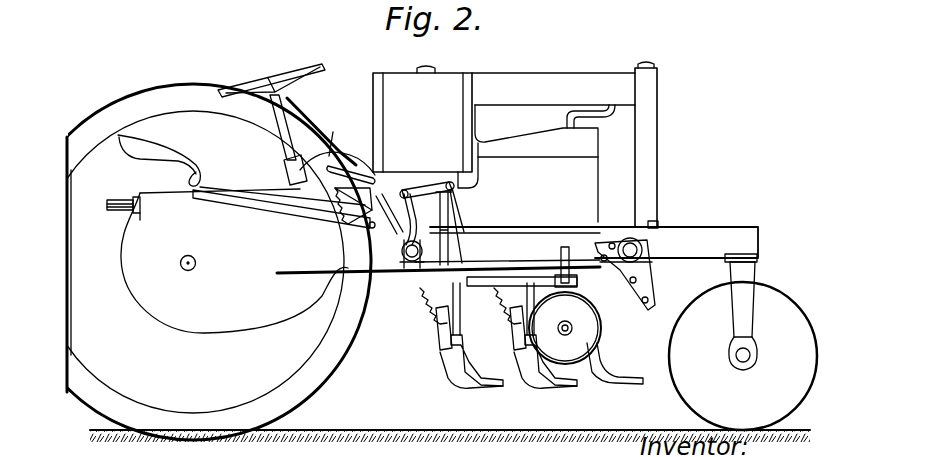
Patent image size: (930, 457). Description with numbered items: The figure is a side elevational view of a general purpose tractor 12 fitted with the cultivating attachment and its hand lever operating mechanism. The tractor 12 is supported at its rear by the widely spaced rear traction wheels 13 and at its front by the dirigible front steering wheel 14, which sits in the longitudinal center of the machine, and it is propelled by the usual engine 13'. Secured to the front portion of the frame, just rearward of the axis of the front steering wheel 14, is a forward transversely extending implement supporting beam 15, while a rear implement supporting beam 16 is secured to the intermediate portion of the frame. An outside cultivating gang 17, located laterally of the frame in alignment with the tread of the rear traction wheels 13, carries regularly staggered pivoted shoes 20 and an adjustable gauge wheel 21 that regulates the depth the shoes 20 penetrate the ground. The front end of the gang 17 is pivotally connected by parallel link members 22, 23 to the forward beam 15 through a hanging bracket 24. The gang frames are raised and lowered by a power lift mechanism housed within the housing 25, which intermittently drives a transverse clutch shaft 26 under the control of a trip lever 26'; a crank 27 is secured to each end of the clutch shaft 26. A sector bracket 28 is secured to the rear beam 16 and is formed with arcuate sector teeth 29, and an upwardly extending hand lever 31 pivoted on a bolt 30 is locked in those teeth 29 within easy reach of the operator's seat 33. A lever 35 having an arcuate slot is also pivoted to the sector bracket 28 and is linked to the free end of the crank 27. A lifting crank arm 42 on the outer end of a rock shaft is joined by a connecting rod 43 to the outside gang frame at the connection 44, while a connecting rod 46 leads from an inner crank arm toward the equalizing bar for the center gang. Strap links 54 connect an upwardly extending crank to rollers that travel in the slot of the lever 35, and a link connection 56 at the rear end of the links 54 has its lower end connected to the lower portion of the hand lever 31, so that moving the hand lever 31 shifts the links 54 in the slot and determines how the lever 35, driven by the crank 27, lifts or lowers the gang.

The tractor 12 is at (358, 340).
The rear traction wheels 13 is at (193, 262).
The engine 13' is at (546, 147).
The front steering wheel 14 is at (773, 300).
The forward implement supporting beam 15 is at (640, 238).
The rear implement supporting beam 16 is at (408, 272).
The outside cultivating gang 17 is at (505, 280).
The pivoted shoes 20 is at (463, 373).
The adjustable gauge wheel 21 is at (572, 352).
The parallel link member 22 is at (640, 300).
The parallel link member 23 is at (612, 243).
The hanging bracket 24 is at (652, 262).
The power take-off housing 25 is at (340, 150).
The clutch shaft 26 is at (241, 193).
The trip lever 26' is at (324, 134).
The crank 27 is at (372, 160).
The sector bracket 28 is at (398, 240).
The sector teeth 29 is at (333, 200).
The bolt 30 is at (370, 227).
The hand lever 31 is at (283, 205).
The operator's seat 33 is at (168, 141).
The lever 35 is at (335, 213).
The lifting crank arm 42 is at (456, 209).
The connecting rod 43 is at (460, 252).
The connection to gang frame 44 is at (427, 184).
The connecting rod 46 is at (449, 220).
The link 54 is at (396, 186).
The link connection 56 is at (391, 214).